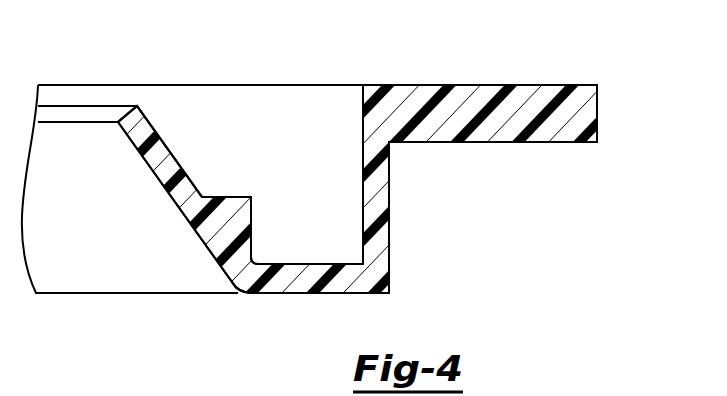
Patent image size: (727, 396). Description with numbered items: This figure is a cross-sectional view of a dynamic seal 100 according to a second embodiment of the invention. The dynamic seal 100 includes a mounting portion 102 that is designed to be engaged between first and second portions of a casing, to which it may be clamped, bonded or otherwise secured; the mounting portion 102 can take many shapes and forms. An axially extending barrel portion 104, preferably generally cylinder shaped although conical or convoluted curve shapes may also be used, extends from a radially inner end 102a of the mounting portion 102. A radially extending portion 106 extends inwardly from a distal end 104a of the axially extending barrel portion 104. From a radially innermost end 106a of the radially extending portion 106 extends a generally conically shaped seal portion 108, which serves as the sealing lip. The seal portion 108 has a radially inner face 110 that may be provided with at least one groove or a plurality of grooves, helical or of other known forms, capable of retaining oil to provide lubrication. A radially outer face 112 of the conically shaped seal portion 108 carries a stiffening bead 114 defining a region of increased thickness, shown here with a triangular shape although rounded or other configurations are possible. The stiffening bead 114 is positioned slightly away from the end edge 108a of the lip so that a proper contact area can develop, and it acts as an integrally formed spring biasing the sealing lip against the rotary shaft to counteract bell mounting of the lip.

The dynamic seal 100 is at (541, 212).
The mounting portion 102 is at (583, 108).
The radially inner end of the mounting portion 102a is at (376, 98).
The axially extending barrel portion 104 is at (380, 197).
The distal end of the barrel portion 104a is at (373, 279).
The radially extending portion 106 is at (308, 278).
The radially innermost end of the radially extending portion 106a is at (240, 296).
The seal portion 108 is at (168, 172).
The end edge of the lip 108a is at (127, 110).
The radially inner face 110 is at (128, 144).
The radially outer face 112 is at (178, 163).
The stiffening bead 114 is at (237, 208).